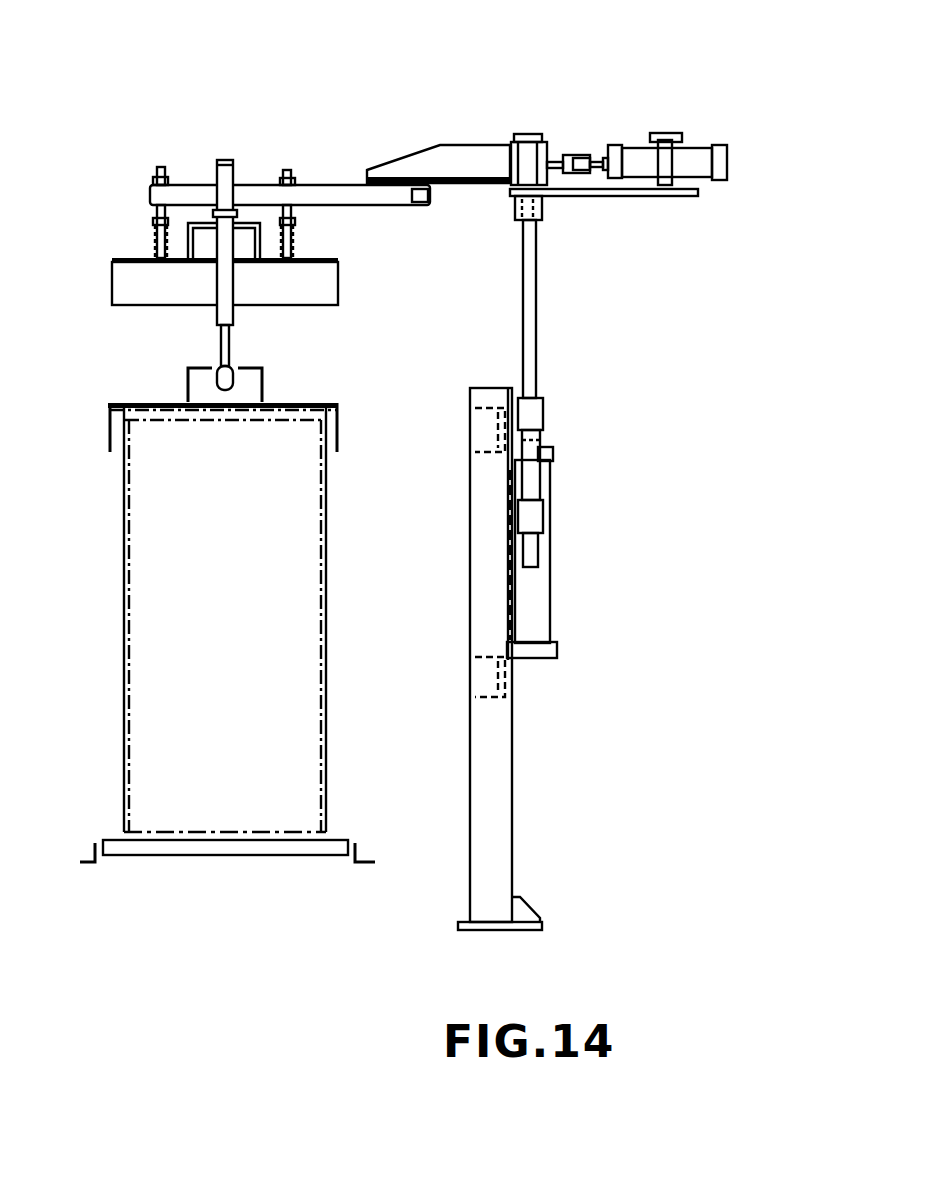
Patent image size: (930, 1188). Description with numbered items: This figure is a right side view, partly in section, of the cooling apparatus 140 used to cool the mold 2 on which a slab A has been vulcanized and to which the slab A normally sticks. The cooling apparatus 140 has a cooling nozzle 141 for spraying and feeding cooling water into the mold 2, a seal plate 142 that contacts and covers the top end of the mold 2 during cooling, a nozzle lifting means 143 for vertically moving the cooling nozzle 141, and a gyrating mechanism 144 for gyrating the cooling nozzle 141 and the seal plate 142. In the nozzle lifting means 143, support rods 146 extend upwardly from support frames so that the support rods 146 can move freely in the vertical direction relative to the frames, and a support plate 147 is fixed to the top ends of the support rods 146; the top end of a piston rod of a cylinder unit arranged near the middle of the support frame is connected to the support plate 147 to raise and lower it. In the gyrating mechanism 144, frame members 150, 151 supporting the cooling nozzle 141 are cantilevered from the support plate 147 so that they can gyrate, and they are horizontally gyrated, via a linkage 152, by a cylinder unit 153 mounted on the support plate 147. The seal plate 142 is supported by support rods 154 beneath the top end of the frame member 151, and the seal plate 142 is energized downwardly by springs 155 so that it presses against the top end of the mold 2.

The cooling apparatus 140 is at (420, 134).
The cooling nozzle 141 is at (235, 392).
The seal plate 142 is at (147, 268).
The nozzle lifting means 143 is at (552, 419).
The gyrating mechanism 144 is at (620, 122).
The support rods 146 is at (532, 303).
The support plate 147 is at (620, 197).
The frame member 150 is at (387, 175).
The frame member 151 is at (260, 187).
The linkage 152 is at (577, 157).
The cylinder unit 153 is at (636, 158).
The support rods 154 is at (168, 198).
The springs 155 is at (152, 224).
The slab A is at (330, 564).
The mold 2 is at (307, 633).